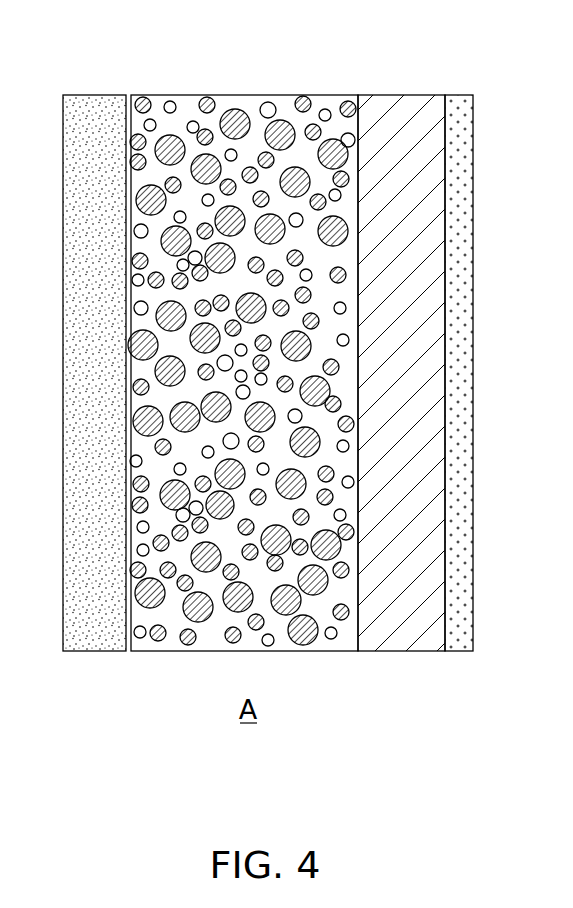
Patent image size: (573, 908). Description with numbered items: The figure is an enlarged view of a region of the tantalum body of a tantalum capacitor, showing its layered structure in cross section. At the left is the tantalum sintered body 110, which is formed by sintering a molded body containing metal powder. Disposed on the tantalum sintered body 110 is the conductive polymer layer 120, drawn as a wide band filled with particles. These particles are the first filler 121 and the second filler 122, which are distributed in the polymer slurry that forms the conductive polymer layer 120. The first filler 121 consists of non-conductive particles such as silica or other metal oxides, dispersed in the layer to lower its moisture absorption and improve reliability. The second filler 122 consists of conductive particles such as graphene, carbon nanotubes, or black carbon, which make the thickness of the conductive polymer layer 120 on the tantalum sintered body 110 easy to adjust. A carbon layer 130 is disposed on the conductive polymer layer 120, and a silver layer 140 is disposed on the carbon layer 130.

The tantalum sintered body 110 is at (88, 110).
The conductive polymer layer 120 is at (158, 107).
The first filler 121 is at (206, 97).
The second filler 122 is at (324, 108).
The carbon layer 130 is at (392, 108).
The silver layer 140 is at (463, 108).